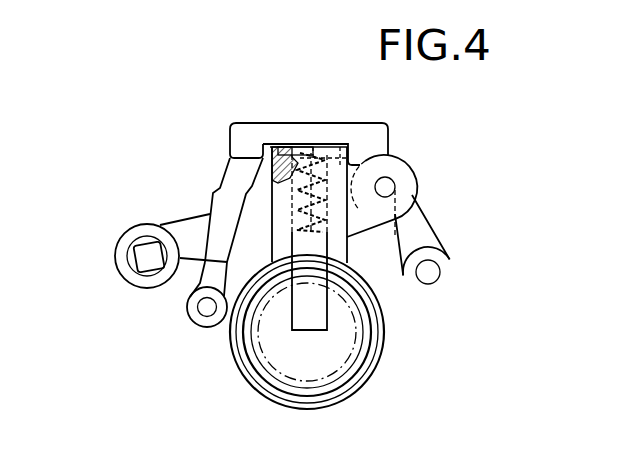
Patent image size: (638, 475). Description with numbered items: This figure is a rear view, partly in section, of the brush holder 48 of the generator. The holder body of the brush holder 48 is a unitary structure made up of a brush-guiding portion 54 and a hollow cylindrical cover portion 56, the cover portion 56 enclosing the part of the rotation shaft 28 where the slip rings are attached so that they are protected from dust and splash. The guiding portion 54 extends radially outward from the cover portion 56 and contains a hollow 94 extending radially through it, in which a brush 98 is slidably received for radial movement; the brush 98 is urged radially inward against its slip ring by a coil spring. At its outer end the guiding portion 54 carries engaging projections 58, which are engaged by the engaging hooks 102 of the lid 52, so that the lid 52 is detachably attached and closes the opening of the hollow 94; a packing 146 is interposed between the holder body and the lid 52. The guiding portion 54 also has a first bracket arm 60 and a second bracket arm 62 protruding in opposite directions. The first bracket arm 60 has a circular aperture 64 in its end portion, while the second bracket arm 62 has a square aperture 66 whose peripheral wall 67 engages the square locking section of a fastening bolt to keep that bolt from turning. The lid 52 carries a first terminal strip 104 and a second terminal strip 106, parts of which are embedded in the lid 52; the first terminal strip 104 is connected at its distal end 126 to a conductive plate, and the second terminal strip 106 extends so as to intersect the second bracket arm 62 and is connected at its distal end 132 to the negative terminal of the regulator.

The rotation shaft 28 is at (313, 383).
The brush holder 48 is at (447, 167).
The lid 52 is at (288, 132).
The brush-guiding portion 54 is at (332, 146).
The cylindrical cover portion 56 is at (370, 380).
The engaging projections 58 is at (348, 157).
The first bracket arm 60 is at (417, 204).
The second bracket arm 62 is at (188, 272).
The circular aperture 64 is at (391, 182).
The square aperture 66 is at (133, 268).
The peripheral wall 67 is at (140, 256).
The hollow 94 is at (291, 198).
The brush 98 is at (304, 331).
The engaging hooks 102 is at (258, 162).
The first terminal strip 104 is at (430, 246).
The second terminal strip 106 is at (217, 196).
The distal end 126 is at (452, 270).
The distal end 132 is at (193, 297).
The packing 146 is at (277, 147).